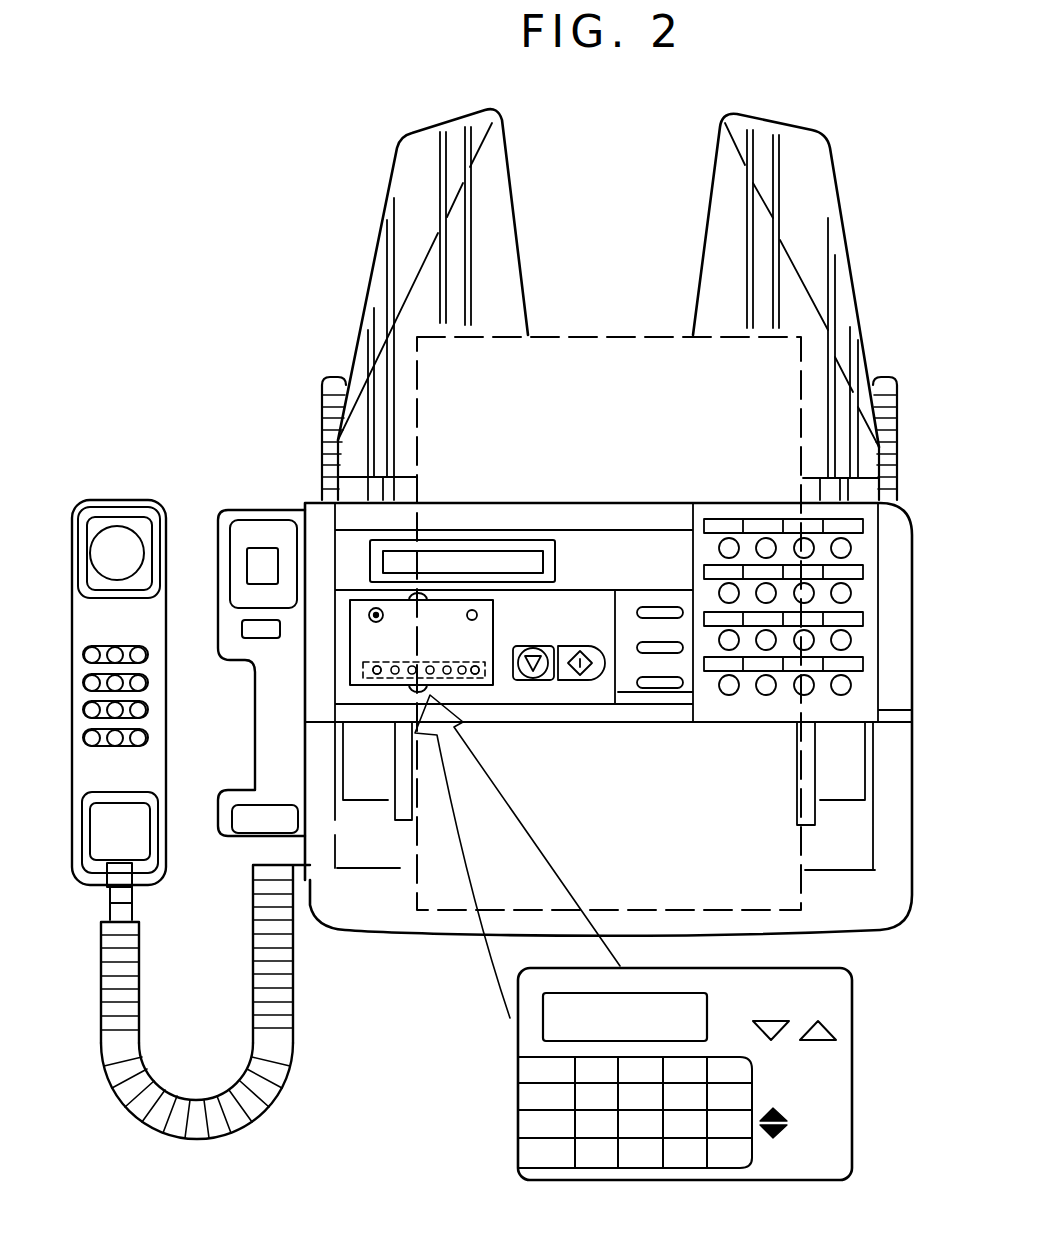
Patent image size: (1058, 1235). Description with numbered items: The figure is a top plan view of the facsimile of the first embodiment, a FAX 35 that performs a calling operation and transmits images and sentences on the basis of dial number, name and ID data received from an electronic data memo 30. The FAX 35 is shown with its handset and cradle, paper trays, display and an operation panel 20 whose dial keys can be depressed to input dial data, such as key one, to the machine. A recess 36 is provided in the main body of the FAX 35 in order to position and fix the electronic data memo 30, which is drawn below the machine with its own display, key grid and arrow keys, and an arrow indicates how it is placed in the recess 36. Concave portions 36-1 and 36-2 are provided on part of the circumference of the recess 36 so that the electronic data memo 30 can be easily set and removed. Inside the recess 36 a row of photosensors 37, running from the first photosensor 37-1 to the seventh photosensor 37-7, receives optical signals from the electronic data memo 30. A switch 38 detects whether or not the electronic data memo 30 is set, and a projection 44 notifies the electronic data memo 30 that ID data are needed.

The operation panel 20 is at (872, 552).
The electronic data memo 30 is at (518, 1127).
The FAX 35 is at (873, 932).
The recess 36 is at (390, 688).
The concave portion 36-1 is at (426, 693).
The concave portion 36-2 is at (420, 596).
The photosensors 37 is at (362, 673).
The photosensor 37-1 is at (374, 660).
The photosensor 37-7 is at (470, 660).
The switch 38 is at (373, 609).
The projection 44 is at (476, 609).